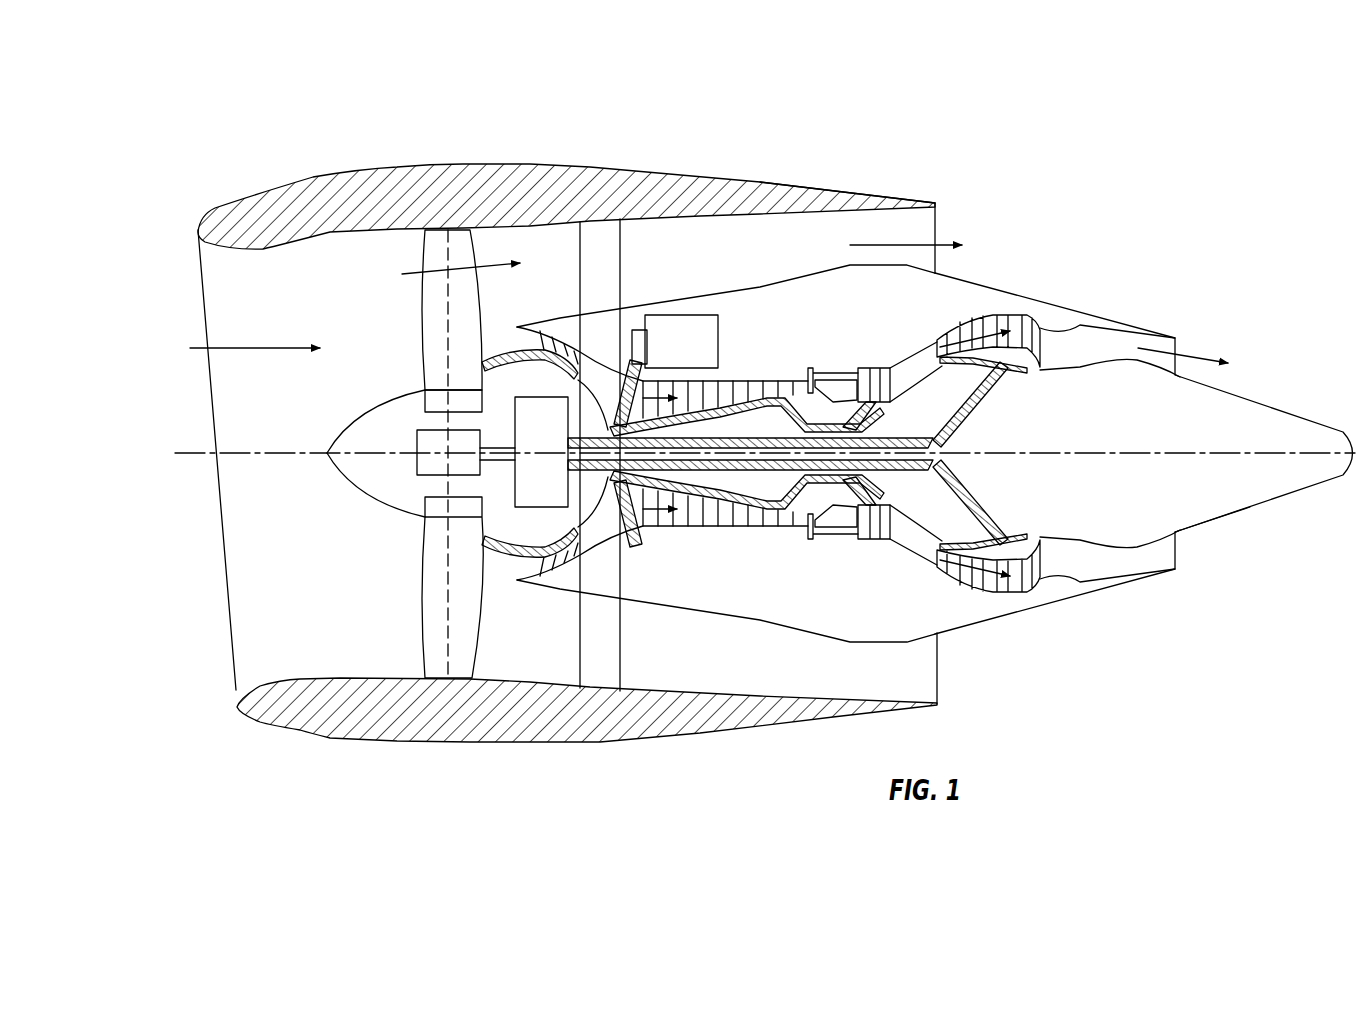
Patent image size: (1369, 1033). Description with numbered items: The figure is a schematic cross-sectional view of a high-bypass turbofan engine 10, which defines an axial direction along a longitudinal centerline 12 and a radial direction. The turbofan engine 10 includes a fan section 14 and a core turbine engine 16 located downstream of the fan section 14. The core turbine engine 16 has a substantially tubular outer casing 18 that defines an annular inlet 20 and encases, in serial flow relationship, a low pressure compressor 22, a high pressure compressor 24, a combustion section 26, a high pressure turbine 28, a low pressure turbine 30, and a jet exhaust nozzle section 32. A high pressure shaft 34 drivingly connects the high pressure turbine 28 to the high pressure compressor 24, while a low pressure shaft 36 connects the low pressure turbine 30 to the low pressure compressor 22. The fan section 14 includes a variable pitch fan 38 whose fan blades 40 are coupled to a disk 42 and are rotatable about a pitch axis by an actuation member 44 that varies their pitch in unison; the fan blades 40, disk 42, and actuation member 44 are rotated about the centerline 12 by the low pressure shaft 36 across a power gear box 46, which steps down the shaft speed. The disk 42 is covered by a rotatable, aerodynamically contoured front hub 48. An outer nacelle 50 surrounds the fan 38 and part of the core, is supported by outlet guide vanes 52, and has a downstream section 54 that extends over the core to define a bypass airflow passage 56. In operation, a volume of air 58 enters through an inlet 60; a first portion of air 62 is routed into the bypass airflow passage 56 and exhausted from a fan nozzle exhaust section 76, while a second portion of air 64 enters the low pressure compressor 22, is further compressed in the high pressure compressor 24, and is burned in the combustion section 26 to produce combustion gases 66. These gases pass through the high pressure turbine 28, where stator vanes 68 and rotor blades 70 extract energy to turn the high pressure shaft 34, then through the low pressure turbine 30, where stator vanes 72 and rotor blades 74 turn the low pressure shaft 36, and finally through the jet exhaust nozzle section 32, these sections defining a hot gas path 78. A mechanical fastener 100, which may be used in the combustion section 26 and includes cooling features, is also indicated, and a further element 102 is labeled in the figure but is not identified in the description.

The turbofan engine 10 is at (1072, 197).
The longitudinal centerline 12 is at (1108, 449).
The fan section 14 is at (372, 252).
The core turbine engine 16 is at (748, 330).
The outer casing 18 is at (777, 628).
The annular inlet 20 is at (523, 567).
The low pressure compressor 22 is at (595, 517).
The high pressure compressor 24 is at (650, 517).
The combustion section 26 is at (832, 517).
The high pressure turbine 28 is at (900, 530).
The low pressure turbine 30 is at (1022, 570).
The jet exhaust nozzle section 32 is at (1083, 567).
The high pressure shaft 34 is at (867, 423).
The low pressure shaft 36 is at (920, 417).
The variable pitch fan 38 is at (381, 509).
The fan blades 40 is at (420, 613).
The disk 42 is at (433, 400).
The actuation member 44 is at (418, 440).
The power gear box 46 is at (553, 413).
The front hub 48 is at (333, 467).
The outer nacelle 50 is at (467, 747).
The outlet guide vanes 52 is at (623, 243).
The downstream section 54 is at (880, 197).
The bypass airflow passage 56 is at (772, 256).
The volume of air 58 is at (260, 347).
The inlet 60 is at (233, 677).
The first portion of air 62 is at (453, 250).
The second portion of air 64 is at (498, 338).
The combustion gases 66 is at (893, 377).
The HP turbine stator vanes 68 is at (850, 520).
The HP turbine rotor blades 70 is at (840, 533).
The LP turbine stator vanes 72 is at (943, 567).
The LP turbine rotor blades 74 is at (960, 583).
The fan nozzle exhaust section 76 is at (923, 227).
The hot gas path 78 is at (920, 350).
The mechanical fastener 100 is at (700, 315).
The sensor 102 is at (627, 377).